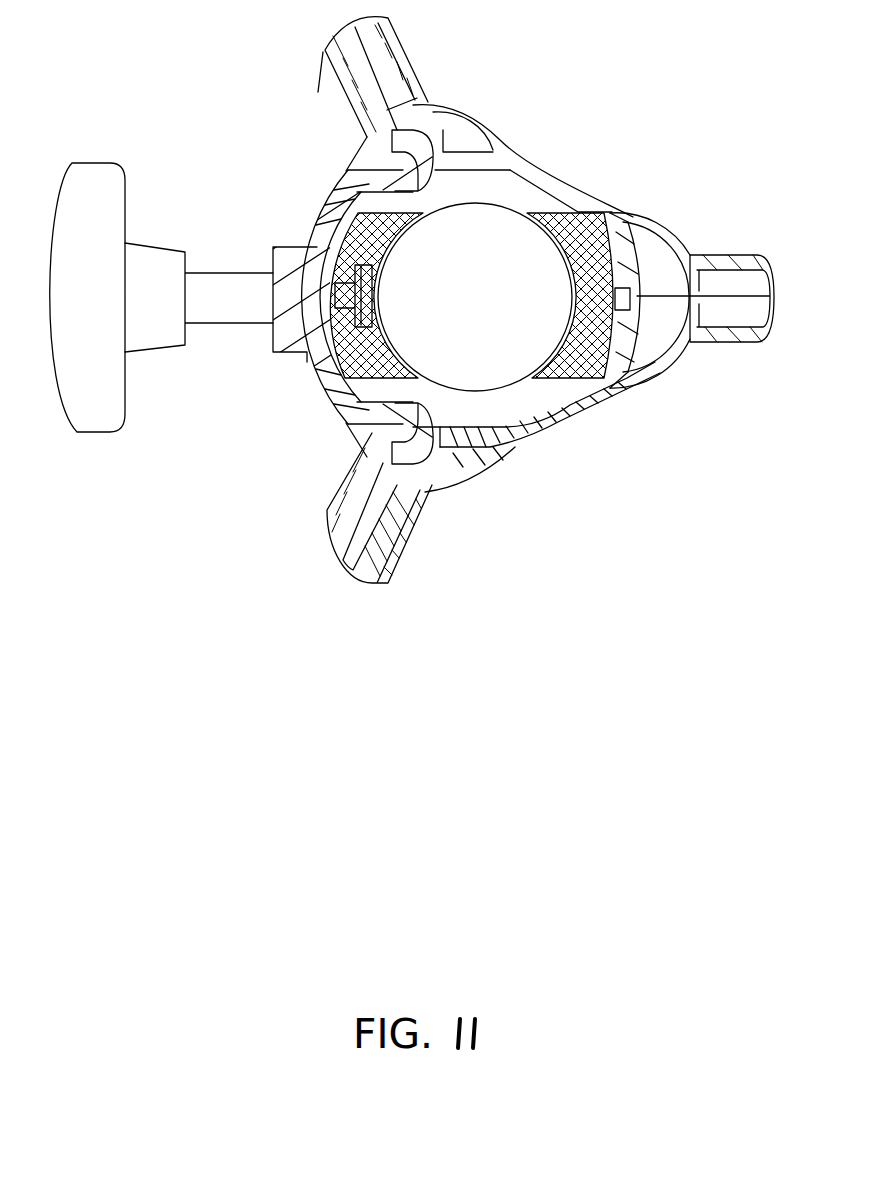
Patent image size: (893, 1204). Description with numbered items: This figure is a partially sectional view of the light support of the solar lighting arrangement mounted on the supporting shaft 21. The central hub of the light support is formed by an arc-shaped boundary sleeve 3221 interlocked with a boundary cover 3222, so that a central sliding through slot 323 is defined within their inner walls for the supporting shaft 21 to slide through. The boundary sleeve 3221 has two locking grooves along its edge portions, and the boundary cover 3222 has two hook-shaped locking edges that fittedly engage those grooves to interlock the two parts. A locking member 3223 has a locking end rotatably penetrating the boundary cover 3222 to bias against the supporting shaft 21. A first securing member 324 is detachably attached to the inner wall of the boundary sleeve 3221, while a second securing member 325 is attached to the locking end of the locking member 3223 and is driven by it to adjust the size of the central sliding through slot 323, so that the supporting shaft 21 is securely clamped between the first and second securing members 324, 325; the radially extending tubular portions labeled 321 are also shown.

The supporting shaft 21 is at (488, 385).
The tubular arm 321 is at (383, 57).
The central sliding through slot 323 is at (417, 382).
The first securing member 324 is at (652, 211).
The second securing member 325 is at (327, 379).
The boundary sleeve 3221 is at (511, 158).
The boundary cover 3222 is at (326, 214).
The locking member 3223 is at (113, 403).